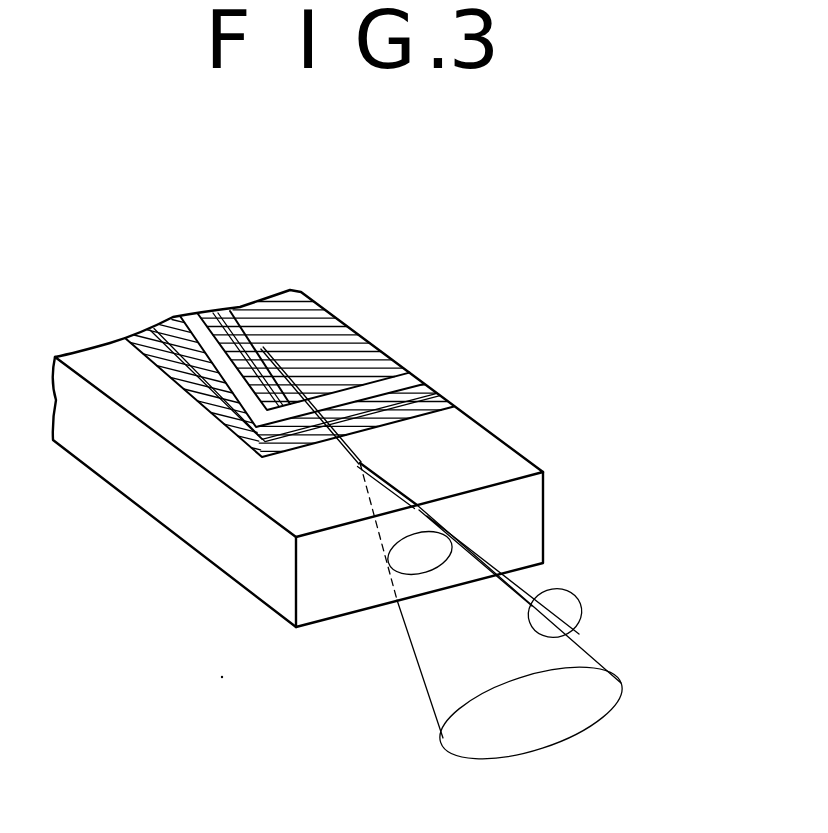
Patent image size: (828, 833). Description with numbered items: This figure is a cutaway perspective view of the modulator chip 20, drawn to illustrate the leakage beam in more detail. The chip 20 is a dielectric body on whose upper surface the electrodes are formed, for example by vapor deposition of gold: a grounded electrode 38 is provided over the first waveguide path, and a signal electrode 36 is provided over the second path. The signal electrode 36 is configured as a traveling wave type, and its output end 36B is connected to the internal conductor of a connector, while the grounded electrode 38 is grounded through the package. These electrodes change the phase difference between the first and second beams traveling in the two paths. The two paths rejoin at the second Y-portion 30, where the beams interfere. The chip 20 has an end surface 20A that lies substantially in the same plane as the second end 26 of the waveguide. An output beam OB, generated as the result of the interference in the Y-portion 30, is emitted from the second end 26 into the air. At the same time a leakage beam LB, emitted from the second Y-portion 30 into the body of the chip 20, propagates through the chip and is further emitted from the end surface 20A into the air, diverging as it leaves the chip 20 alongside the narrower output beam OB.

The modulator chip 20 is at (483, 443).
The end surface 20A is at (531, 497).
The second end 26 is at (417, 510).
The second Y-portion 30 is at (357, 463).
The signal electrode 36 is at (135, 345).
The output end 36B is at (440, 393).
The grounded electrode 38 is at (297, 317).
The output beam OB is at (560, 580).
The leakage beam LB is at (423, 693).